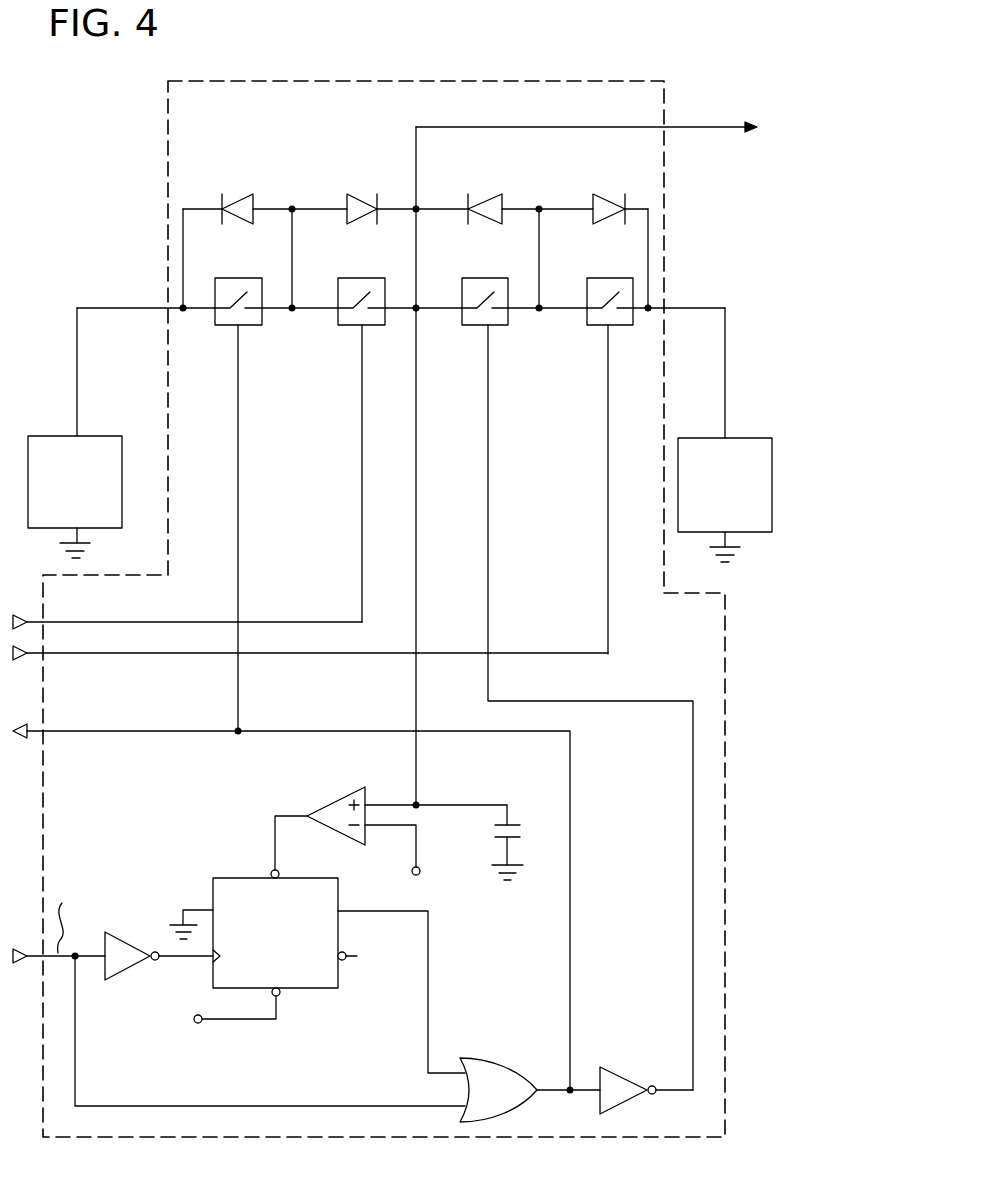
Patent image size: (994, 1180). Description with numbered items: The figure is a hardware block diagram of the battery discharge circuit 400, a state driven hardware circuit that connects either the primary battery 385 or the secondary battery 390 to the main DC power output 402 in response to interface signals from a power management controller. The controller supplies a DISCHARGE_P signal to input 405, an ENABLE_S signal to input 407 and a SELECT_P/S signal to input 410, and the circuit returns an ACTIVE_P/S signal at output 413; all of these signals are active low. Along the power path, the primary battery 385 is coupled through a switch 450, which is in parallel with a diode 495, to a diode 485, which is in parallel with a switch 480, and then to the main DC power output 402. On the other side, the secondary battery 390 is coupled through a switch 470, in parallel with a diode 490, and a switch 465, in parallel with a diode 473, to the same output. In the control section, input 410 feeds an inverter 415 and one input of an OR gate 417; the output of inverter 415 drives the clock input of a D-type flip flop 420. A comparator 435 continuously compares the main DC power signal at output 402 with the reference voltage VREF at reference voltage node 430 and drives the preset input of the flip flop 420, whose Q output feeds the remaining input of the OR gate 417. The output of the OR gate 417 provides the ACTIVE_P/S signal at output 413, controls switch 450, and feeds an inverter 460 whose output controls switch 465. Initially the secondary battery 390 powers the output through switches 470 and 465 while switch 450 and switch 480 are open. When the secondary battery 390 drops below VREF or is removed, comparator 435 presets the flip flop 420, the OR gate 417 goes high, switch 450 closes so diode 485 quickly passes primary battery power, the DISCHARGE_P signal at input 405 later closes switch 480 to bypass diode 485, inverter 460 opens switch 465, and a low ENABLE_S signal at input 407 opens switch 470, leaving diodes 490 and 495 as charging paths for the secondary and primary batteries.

The battery discharge circuit 400 is at (168, 88).
The main DC power output 402 is at (740, 128).
The primary battery 385 is at (105, 436).
The secondary battery 390 is at (710, 438).
The diode 495 is at (237, 200).
The diode 485 is at (352, 200).
The diode 473 is at (490, 196).
The diode 490 is at (600, 197).
The switch 450 is at (250, 328).
The switch 480 is at (366, 330).
The switch 465 is at (492, 330).
The switch 470 is at (612, 330).
The input 405 is at (68, 622).
The input 407 is at (74, 654).
The output 413 is at (75, 732).
The comparator 435 is at (346, 794).
The reference voltage node 430 is at (417, 856).
The D-type flip flop 420 is at (238, 878).
The inverter 415 is at (113, 932).
The input 410 is at (28, 958).
The OR gate 417 is at (487, 1058).
The inverter 460 is at (620, 1076).